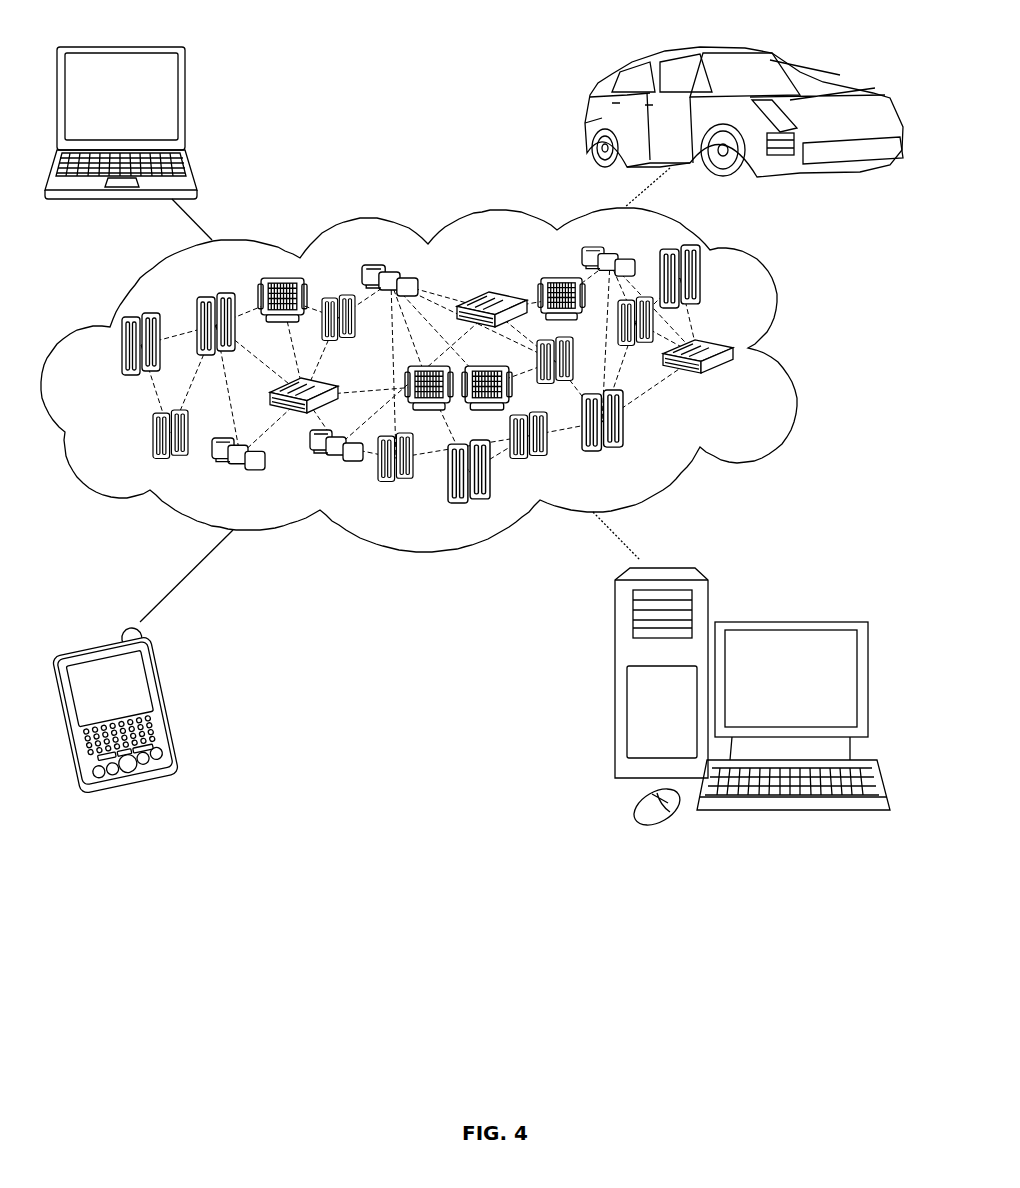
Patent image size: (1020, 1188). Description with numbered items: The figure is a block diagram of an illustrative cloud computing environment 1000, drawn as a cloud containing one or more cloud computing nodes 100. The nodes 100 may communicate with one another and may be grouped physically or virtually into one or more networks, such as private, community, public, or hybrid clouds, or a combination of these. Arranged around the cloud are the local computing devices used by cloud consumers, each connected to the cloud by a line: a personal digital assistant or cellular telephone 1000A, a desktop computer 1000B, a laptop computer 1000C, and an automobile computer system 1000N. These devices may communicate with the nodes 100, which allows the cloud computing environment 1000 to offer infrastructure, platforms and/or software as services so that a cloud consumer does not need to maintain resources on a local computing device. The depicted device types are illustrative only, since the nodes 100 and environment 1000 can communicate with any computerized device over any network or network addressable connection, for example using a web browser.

The cloud computing environment 1000 is at (793, 355).
The cloud computing nodes 100 is at (744, 387).
The personal digital assistant (PDA) or cellular telephone 1000A is at (177, 707).
The desktop computer 1000B is at (803, 596).
The laptop computer 1000C is at (187, 103).
The automobile computer system 1000N is at (587, 120).